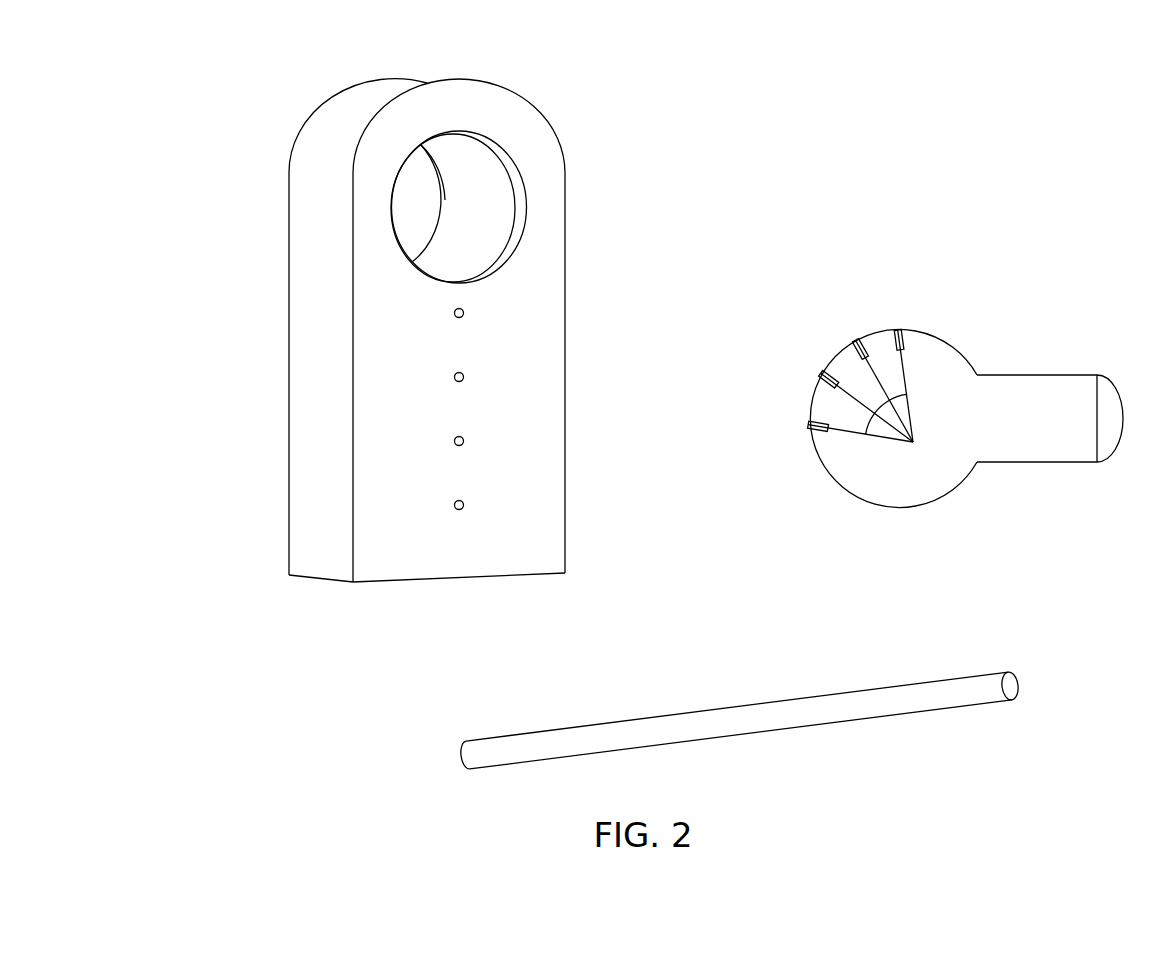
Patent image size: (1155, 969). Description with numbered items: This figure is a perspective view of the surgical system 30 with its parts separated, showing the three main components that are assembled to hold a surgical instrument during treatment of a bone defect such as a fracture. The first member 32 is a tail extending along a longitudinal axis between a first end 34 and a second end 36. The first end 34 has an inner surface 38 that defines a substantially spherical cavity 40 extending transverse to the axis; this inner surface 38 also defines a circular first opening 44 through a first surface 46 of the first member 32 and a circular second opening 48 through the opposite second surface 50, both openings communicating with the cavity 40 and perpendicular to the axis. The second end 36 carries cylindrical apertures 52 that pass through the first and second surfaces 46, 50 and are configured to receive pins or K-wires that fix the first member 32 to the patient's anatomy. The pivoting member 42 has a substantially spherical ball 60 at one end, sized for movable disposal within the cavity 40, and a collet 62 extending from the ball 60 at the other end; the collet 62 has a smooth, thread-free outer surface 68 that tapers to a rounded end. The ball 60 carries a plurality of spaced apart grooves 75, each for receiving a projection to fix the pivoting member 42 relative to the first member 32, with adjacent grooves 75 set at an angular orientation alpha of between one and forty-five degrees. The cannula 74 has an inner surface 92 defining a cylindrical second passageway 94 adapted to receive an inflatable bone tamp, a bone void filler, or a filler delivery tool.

The surgical system 30 is at (676, 636).
The first member 32 is at (406, 312).
The first end 34 is at (350, 105).
The second end 36 is at (543, 553).
The inner surface 38 is at (460, 148).
The spherical cavity 40 is at (500, 193).
The pivoting member 42 is at (942, 408).
The first opening 44 is at (540, 255).
The first surface 46 is at (370, 294).
The second opening 48 is at (416, 168).
The second surface 50 is at (288, 520).
The cylindrical aperture 52 is at (464, 316).
The ball 60 is at (882, 490).
The collet 62 is at (1083, 455).
The outer surface 68 is at (1037, 380).
The cannula 74 is at (691, 758).
The grooves 75 is at (900, 332).
The inner surface 92 is at (458, 746).
The second passageway 94 is at (438, 766).